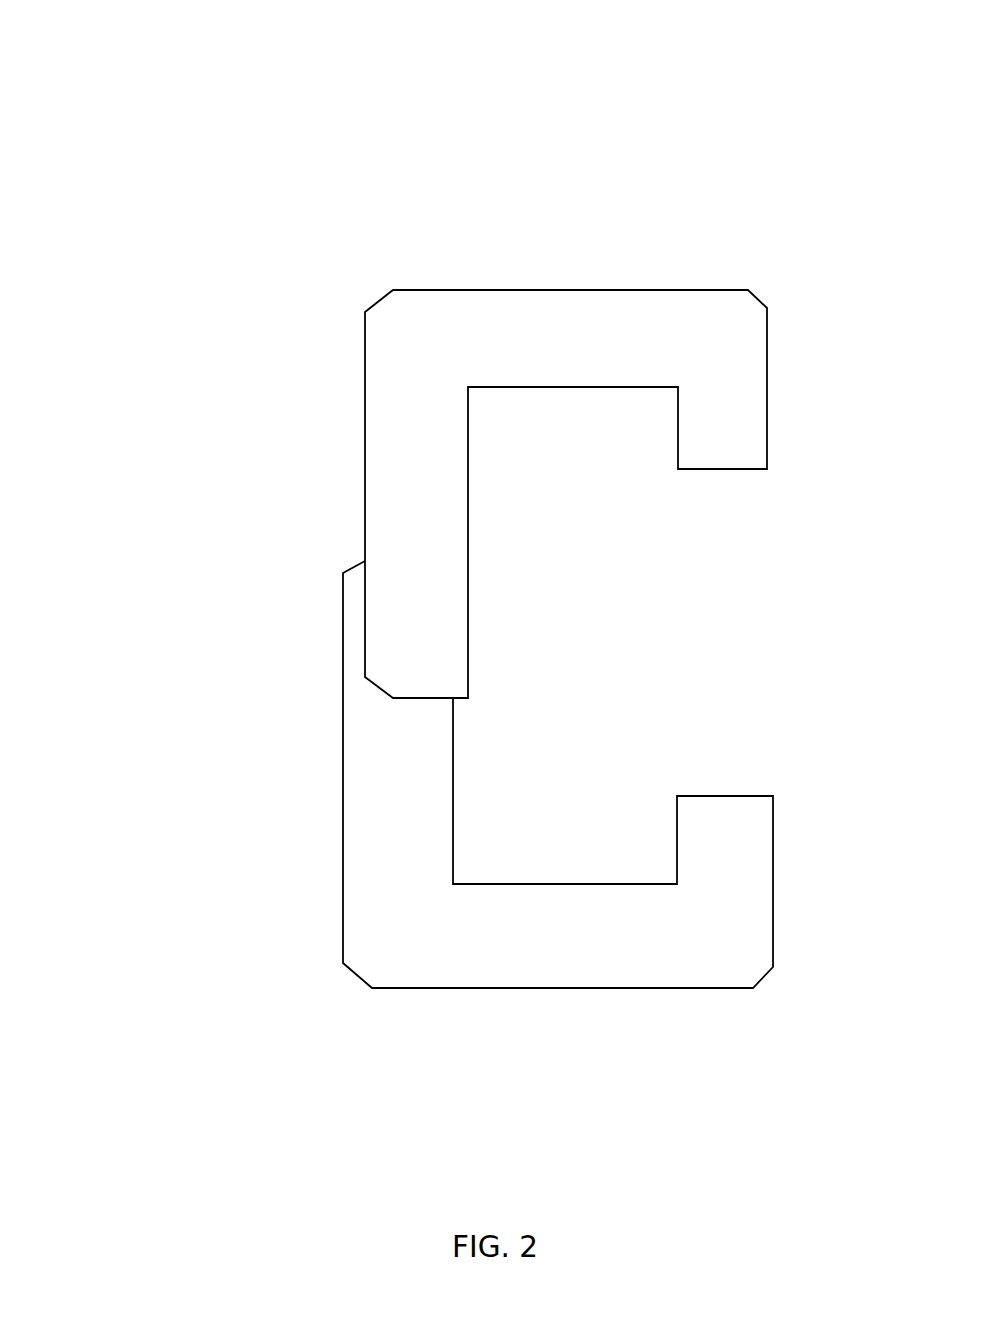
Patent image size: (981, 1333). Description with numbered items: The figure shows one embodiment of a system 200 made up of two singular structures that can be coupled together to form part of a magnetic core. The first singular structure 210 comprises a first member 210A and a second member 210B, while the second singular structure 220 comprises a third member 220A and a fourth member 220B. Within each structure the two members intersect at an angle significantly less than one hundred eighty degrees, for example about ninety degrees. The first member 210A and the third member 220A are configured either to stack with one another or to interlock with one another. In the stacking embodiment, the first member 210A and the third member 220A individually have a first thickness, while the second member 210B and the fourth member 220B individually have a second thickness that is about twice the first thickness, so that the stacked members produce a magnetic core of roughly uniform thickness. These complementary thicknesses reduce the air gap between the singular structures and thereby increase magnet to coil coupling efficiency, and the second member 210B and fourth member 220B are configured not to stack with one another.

The system 200 is at (615, 71).
The first singular structure 210 is at (566, 494).
The first member 210A is at (345, 687).
The second member 210B is at (682, 255).
The second singular structure 220 is at (558, 774).
The third member 220A is at (267, 963).
The fourth member 220B is at (698, 1000).